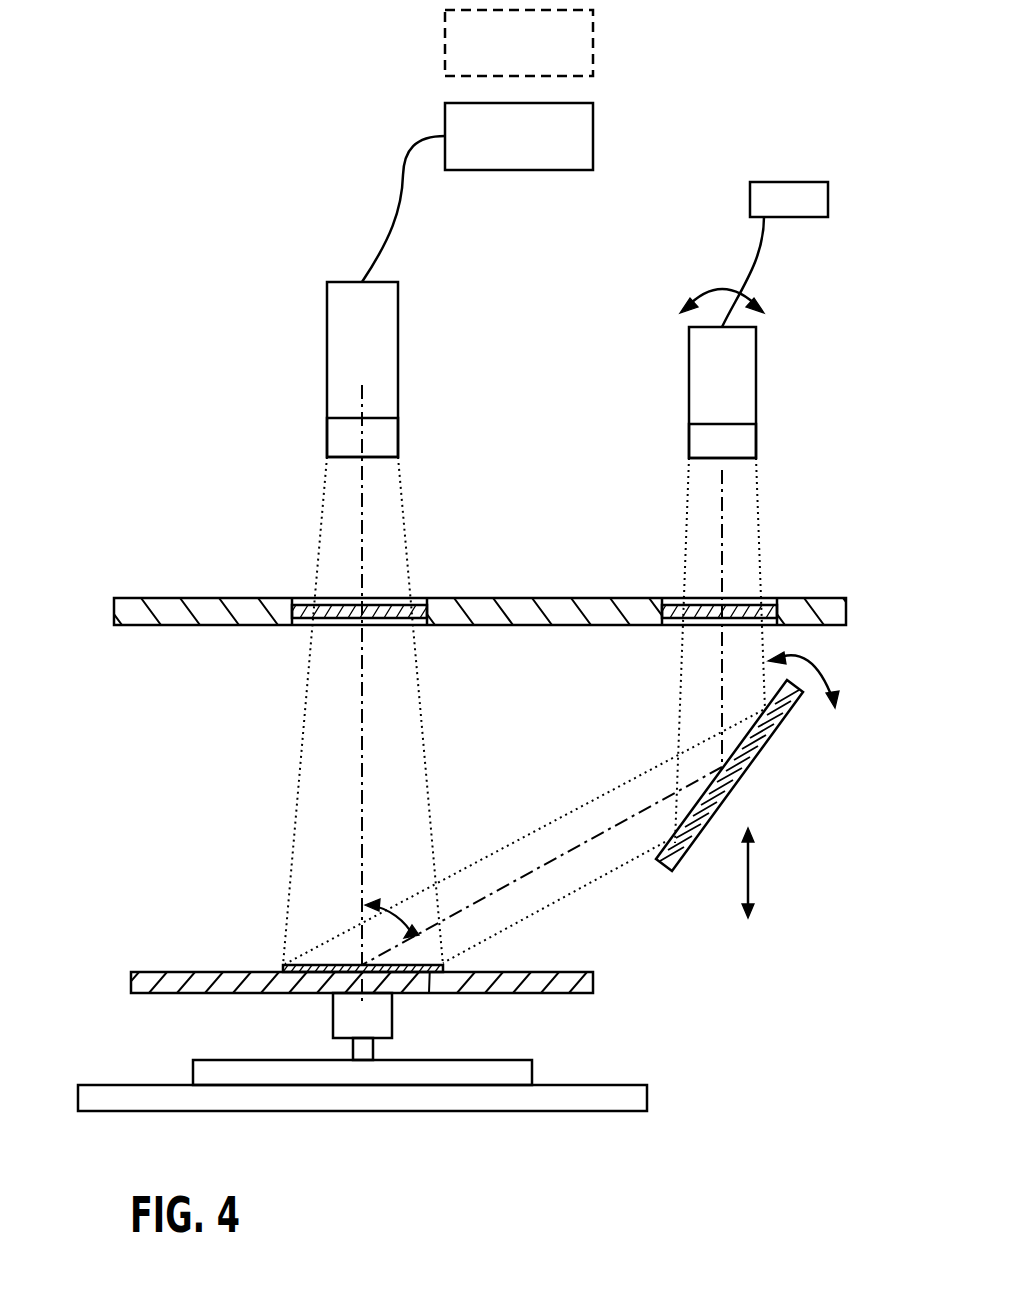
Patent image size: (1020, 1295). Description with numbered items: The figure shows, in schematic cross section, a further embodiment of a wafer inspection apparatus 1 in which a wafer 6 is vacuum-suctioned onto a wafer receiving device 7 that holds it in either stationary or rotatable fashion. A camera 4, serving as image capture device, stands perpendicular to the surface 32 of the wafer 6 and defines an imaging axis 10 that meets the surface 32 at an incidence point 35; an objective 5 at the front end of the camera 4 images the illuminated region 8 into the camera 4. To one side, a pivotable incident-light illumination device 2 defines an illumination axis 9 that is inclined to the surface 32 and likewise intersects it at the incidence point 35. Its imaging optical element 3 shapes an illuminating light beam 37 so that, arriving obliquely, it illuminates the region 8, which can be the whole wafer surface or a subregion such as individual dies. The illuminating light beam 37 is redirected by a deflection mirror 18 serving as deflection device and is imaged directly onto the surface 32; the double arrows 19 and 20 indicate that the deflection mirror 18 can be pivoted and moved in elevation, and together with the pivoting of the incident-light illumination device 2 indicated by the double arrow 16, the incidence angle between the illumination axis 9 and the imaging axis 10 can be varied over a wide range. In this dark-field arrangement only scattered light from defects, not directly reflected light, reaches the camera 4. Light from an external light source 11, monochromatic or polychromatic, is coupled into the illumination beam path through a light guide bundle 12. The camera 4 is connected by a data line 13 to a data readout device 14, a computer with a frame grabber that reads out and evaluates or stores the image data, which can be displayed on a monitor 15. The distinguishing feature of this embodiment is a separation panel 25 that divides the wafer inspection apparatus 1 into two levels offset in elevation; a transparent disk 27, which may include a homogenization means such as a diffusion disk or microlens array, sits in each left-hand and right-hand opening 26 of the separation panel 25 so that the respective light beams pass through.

The wafer inspection apparatus 1 is at (210, 305).
The incident-light illumination device 2 is at (743, 378).
The imaging optical element 3 is at (698, 440).
The camera 4 is at (385, 345).
The objective 5 is at (385, 440).
The wafer 6 is at (593, 983).
The wafer receiving device 7 is at (380, 1013).
The illuminated region 8 is at (300, 960).
The illumination axis 9 is at (575, 848).
The imaging axis 10 is at (370, 672).
The external light source 11 is at (785, 182).
The light guide bundle 12 is at (757, 253).
The data line 13 is at (402, 188).
The data readout device 14 is at (445, 110).
The monitor 15 is at (445, 47).
The double arrow 16 is at (690, 290).
The deflection mirror 18 is at (758, 752).
The double arrow 19 is at (830, 660).
The double arrow 20 is at (750, 862).
The separation panel 25 is at (200, 605).
The opening 26 is at (420, 598).
The transparent disk 27 is at (305, 618).
The surface 32 is at (172, 970).
The incidence point 35 is at (362, 965).
The illuminating light beam 37 is at (577, 890).